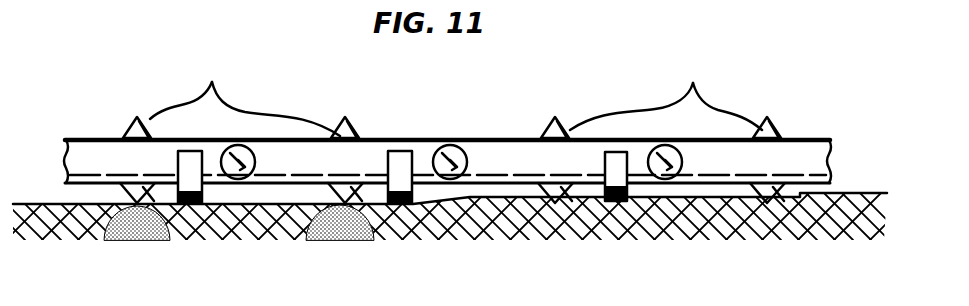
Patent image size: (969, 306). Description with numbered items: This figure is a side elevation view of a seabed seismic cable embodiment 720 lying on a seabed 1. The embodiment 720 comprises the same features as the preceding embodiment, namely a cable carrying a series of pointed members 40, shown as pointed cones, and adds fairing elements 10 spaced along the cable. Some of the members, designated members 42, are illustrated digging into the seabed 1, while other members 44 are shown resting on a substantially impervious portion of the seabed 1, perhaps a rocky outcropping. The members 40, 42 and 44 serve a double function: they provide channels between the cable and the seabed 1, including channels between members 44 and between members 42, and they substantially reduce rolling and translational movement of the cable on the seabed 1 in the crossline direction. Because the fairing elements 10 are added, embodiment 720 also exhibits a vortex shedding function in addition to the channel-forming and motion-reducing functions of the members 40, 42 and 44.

The seabed cable embodiment 720 is at (86, 116).
The members 40 is at (228, 146).
The fairing elements 10 is at (400, 163).
The members 44 is at (118, 238).
The members 42 is at (561, 203).
The seabed 1 is at (857, 193).